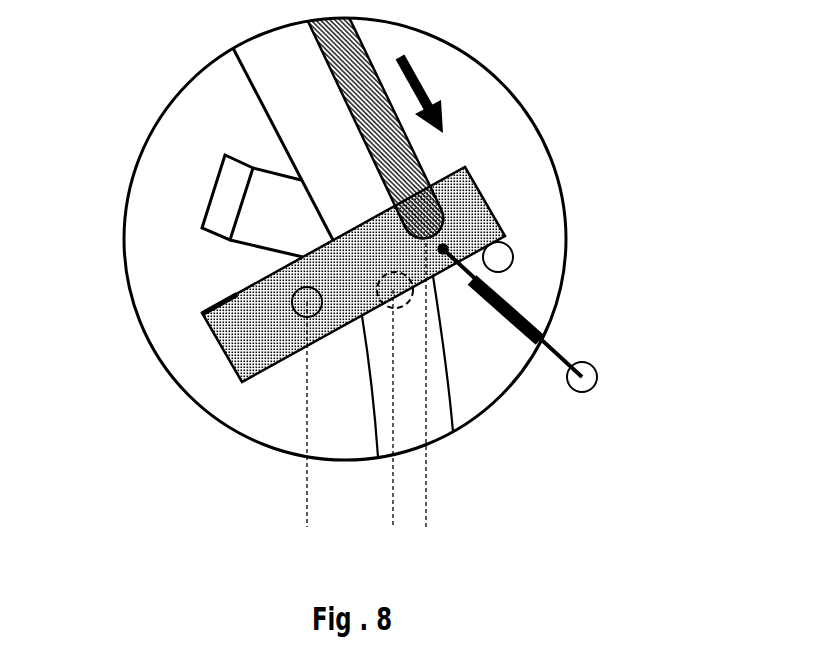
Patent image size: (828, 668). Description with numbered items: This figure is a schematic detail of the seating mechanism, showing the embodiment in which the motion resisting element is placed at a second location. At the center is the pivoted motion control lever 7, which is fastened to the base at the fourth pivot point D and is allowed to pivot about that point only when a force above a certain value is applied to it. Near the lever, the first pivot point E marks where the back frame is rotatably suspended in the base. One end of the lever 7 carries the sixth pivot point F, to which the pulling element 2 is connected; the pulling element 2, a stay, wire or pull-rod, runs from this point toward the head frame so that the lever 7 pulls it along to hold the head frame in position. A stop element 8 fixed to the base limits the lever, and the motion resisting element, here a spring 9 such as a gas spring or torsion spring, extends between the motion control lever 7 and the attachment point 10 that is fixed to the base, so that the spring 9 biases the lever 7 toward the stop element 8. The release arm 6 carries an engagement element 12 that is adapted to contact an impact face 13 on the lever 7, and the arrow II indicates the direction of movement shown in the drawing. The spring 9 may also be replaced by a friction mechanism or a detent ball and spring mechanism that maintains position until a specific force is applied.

The pulling element 2 is at (427, 173).
The release arm 6 is at (272, 185).
The motion control lever 7 is at (218, 342).
The stop element 8 is at (500, 257).
The spring 9 is at (518, 305).
The attachment point 10 is at (584, 377).
The engagement element 12 is at (227, 192).
The impact face 13 is at (220, 305).
The fourth pivot point D is at (307, 429).
The first pivot point E is at (395, 422).
The sixth pivot point F is at (425, 407).
The movement direction II is at (441, 88).